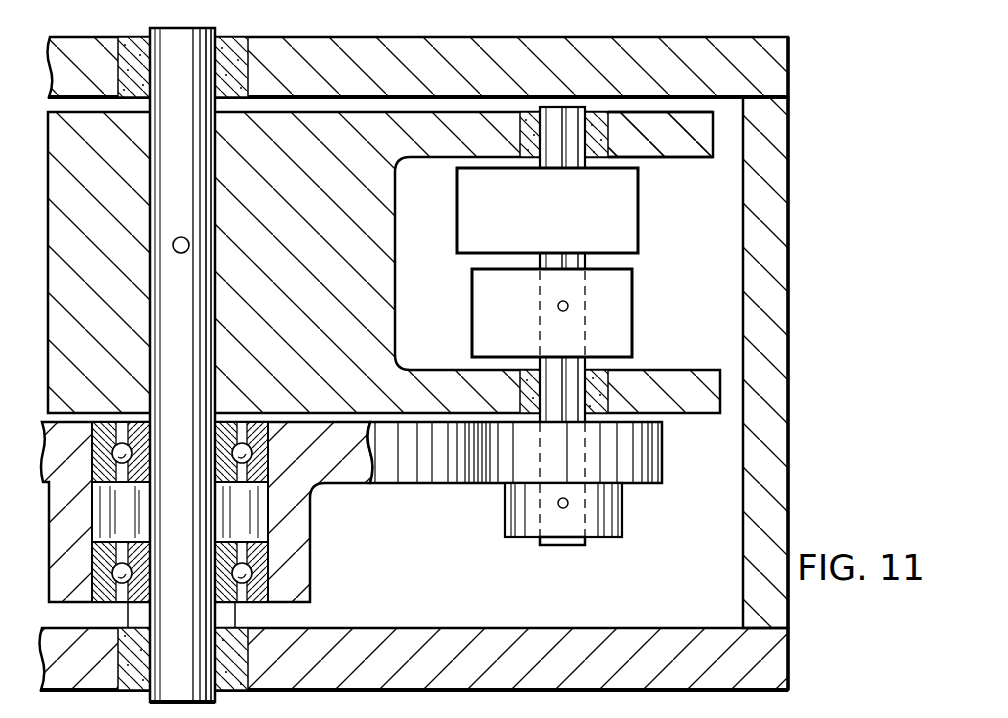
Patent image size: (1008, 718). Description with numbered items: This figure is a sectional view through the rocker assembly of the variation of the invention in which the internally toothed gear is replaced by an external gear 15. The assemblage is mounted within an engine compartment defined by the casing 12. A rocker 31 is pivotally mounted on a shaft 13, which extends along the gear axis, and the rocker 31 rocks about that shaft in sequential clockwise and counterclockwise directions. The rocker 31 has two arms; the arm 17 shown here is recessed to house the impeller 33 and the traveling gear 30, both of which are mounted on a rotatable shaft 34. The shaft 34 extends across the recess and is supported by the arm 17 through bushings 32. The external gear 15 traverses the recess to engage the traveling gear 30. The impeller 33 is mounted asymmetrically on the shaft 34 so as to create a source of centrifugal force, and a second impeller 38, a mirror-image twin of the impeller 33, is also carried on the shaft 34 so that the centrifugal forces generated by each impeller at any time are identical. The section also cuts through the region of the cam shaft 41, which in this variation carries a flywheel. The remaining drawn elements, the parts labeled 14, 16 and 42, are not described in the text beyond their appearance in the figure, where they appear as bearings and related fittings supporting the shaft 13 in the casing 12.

The casing 12 is at (778, 36).
The shaft 13 is at (207, 37).
The bushing 14 is at (139, 37).
The external gear 15 is at (300, 598).
The ball bearing 16 is at (254, 573).
The arm 17 is at (673, 118).
The traveling gear 30 is at (608, 527).
The rocker 31 is at (420, 125).
The bushings 32 is at (527, 120).
The impeller 33 is at (632, 310).
The shaft 34 is at (560, 115).
The second impeller 38 is at (633, 214).
The cam shaft 41 is at (580, 717).
The roller 42 is at (672, 692).